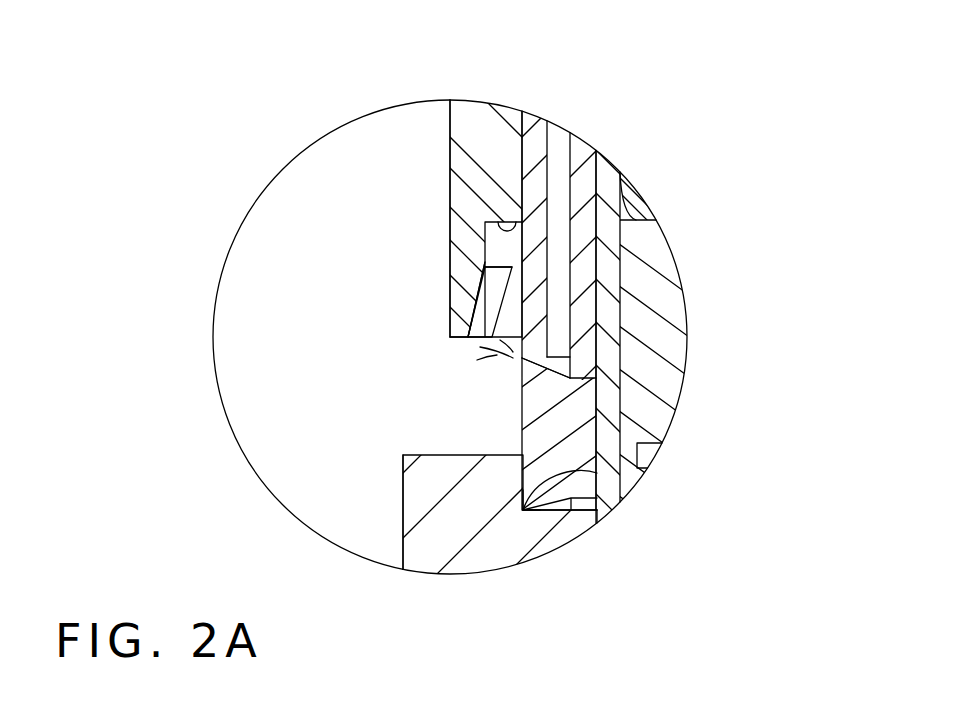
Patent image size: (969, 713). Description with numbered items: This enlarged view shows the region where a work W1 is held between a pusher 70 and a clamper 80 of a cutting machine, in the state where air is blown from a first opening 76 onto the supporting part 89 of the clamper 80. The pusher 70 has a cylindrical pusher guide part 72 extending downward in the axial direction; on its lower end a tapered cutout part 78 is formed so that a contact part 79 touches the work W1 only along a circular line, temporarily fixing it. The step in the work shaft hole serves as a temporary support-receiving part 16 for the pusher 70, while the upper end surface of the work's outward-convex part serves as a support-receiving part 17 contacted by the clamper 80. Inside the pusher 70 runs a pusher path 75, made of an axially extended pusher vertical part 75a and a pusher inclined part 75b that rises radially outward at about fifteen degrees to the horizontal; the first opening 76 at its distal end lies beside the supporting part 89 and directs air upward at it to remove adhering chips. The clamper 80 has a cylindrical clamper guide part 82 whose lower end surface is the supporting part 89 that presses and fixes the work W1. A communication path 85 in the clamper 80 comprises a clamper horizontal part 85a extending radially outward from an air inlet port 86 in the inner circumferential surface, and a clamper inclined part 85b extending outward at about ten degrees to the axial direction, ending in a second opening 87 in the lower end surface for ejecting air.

The temporary support-receiving part 16 is at (600, 480).
The support-receiving part 17 is at (472, 455).
The pusher 70 is at (558, 193).
The pusher guide part 72 is at (598, 412).
The pusher path 75 is at (548, 142).
The pusher vertical part 75a is at (598, 165).
The pusher inclined part 75b is at (555, 367).
The first opening 76 is at (521, 363).
The tapered cutout part 78 is at (574, 511).
The contact part 79 is at (524, 512).
The clamper 80 is at (473, 100).
The clamper guide part 82 is at (450, 103).
The communication path 85 is at (490, 240).
The clamper horizontal part 85a is at (493, 257).
The clamper inclined part 85b is at (483, 316).
The air inlet port 86 is at (497, 220).
The second opening 87 is at (477, 338).
The supporting part 89 is at (457, 338).
The work W1 is at (403, 538).